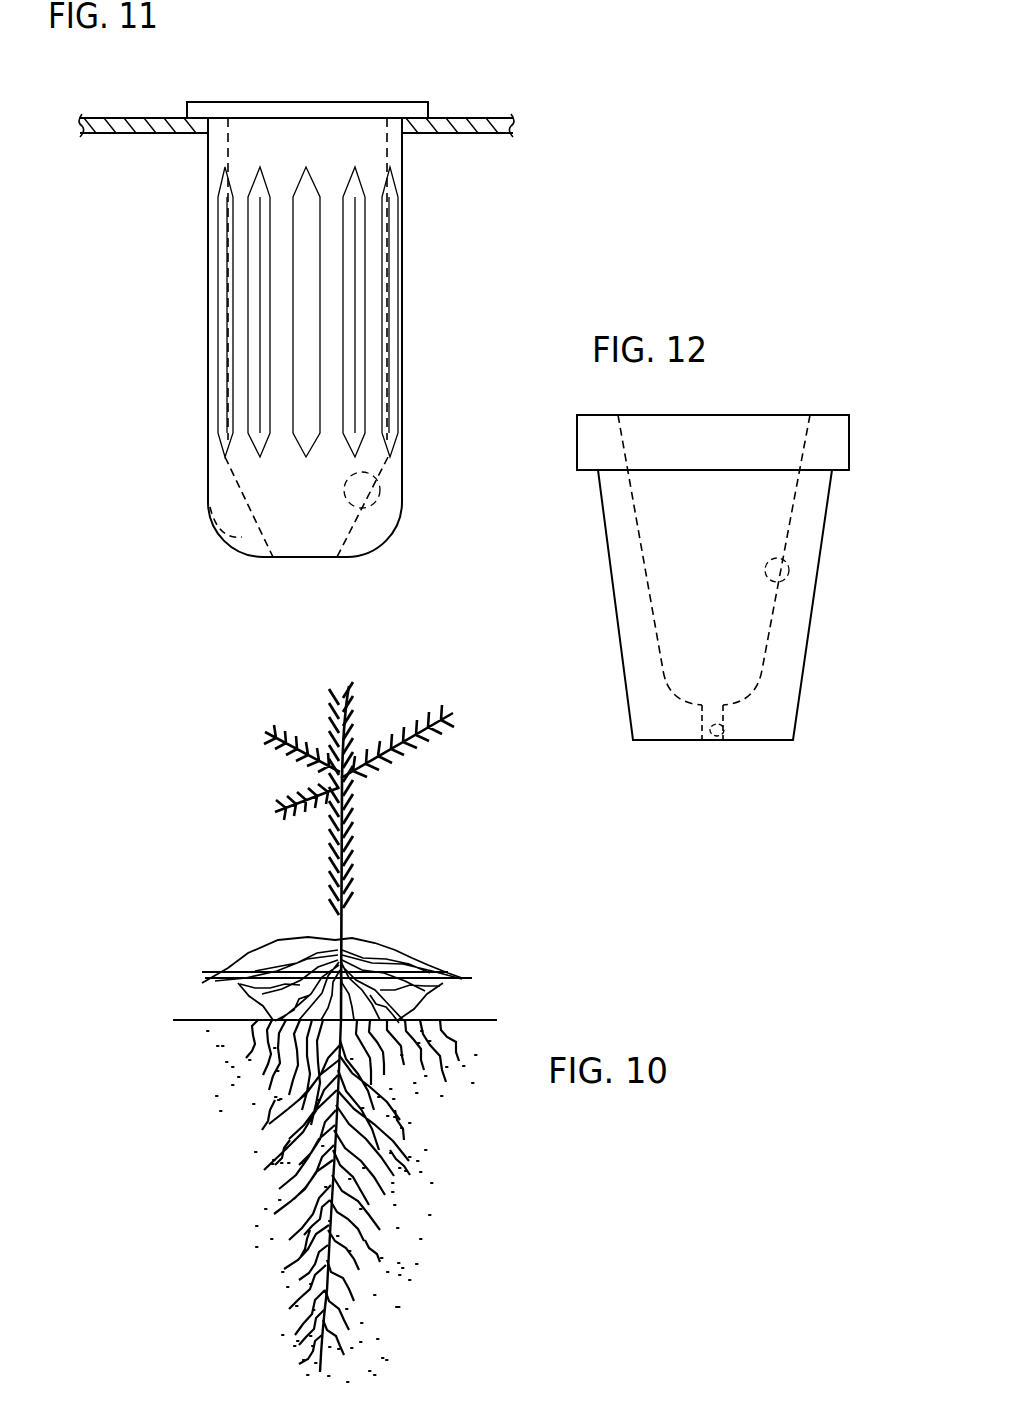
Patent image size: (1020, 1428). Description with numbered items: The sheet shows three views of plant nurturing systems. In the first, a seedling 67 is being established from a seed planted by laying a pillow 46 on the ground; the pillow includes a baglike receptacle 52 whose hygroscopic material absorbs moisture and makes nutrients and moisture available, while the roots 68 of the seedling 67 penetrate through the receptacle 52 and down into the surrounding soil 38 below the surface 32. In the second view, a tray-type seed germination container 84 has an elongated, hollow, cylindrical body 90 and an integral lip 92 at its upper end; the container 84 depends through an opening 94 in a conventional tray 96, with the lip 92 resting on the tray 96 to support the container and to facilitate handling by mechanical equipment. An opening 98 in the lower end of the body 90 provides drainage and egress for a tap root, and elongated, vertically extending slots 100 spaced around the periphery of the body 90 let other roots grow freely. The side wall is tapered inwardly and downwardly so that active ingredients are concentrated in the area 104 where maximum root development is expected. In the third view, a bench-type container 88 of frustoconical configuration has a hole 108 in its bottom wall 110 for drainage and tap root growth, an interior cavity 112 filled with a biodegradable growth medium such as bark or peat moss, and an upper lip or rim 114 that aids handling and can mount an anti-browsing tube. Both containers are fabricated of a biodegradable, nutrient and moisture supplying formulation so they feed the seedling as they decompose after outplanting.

In FIG. 10, the surface 32 is at (200, 1020).
In FIG. 10, the surrounding soil 38 is at (250, 1103).
In FIG. 10, the pillow 46 is at (274, 933).
In FIG. 10, the baglike receptacle 52 is at (400, 947).
In FIG. 10, the seedling 67 is at (366, 845).
In FIG. 10, the roots 68 is at (393, 1127).
In FIG. 11, the seed germination container 84 is at (345, 90).
In FIG. 12, the container 88 is at (600, 580).
In FIG. 11, the container body 90 is at (205, 246).
In FIG. 11, the lip 92 is at (207, 102).
In FIG. 11, the opening 94 is at (398, 123).
In FIG. 11, the tray 96 is at (125, 118).
In FIG. 11, the opening 98 is at (382, 487).
In FIG. 11, the slots 100 is at (320, 300).
In FIG. 11, the area of maximum root development 104 is at (210, 507).
In FIG. 12, the hole 108 is at (718, 742).
In FIG. 12, the bottom wall 110 is at (677, 740).
In FIG. 12, the interior cavity 112 is at (790, 573).
In FIG. 12, the upper lip or rim 114 is at (835, 415).